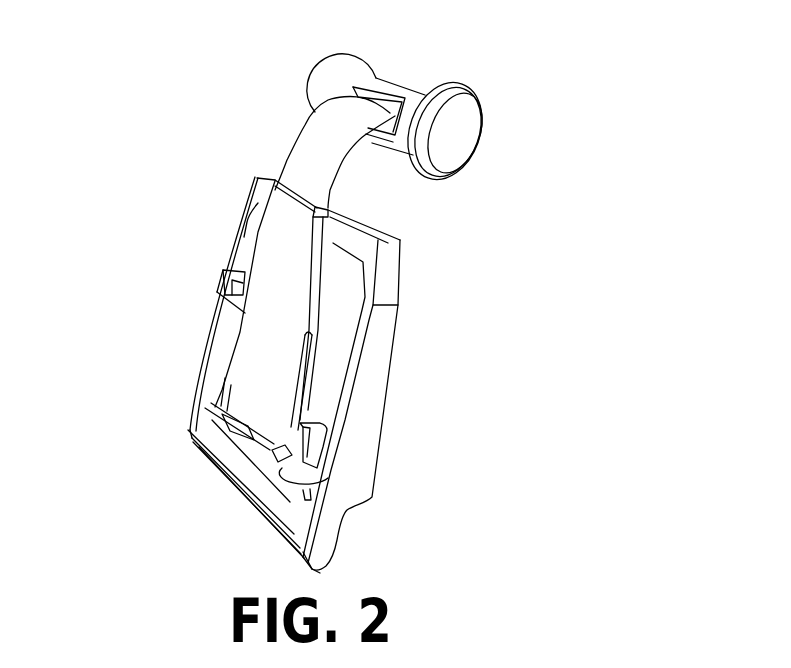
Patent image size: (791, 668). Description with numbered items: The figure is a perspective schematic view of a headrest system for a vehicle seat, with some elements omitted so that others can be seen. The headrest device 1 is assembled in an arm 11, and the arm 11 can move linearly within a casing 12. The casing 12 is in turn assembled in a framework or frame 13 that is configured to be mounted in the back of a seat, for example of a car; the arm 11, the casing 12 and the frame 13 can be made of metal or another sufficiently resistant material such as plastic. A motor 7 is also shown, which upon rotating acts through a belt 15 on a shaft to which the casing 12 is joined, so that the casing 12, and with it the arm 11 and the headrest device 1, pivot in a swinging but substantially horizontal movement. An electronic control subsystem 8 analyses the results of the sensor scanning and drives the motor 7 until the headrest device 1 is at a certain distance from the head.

The headrest device 1 is at (383, 83).
The motor 7 is at (290, 448).
The electronic control subsystem 8 is at (303, 448).
The arm 11 is at (296, 149).
The casing 12 is at (262, 273).
The frame 13 is at (372, 380).
The belt 15 is at (288, 386).